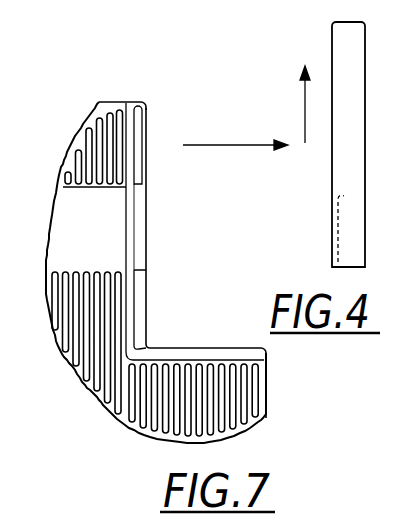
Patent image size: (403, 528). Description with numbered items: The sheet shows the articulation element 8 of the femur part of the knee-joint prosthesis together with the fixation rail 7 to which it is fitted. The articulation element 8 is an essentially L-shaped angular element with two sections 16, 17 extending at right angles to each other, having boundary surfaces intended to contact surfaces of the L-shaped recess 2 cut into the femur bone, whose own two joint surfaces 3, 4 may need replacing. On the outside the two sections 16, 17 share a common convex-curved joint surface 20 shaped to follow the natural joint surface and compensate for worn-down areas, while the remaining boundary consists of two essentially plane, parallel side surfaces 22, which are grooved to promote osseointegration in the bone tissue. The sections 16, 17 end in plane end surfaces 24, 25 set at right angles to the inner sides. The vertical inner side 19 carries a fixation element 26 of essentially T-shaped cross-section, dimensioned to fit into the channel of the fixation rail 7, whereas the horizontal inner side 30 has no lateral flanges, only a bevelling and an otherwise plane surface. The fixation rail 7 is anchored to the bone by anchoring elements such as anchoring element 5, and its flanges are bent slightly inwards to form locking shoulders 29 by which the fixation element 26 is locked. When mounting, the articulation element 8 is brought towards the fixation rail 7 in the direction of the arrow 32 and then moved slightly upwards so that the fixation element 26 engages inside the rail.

In FIG. 4, the fixation rail 7 is at (364, 235).
In FIG. 4, the locking shoulders 29 is at (330, 205).
In FIG. 7, the arrow 32 is at (235, 145).
In FIG. 7, the end surface 24 is at (113, 102).
In FIG. 7, the fixation element 26 is at (147, 138).
In FIG. 7, the inner side 19 is at (128, 298).
In FIG. 7, the horizontal inner side 30 is at (183, 348).
In FIG. 7, the end surface 25 is at (266, 368).
In FIG. 7, the section 17 is at (261, 402).
In FIG. 7, the section 16 is at (63, 208).
In FIG. 7, the convex-curved joint surface 20 is at (53, 320).
In FIG. 7, the articulation element 8 is at (75, 380).
In FIG. 7, the side surfaces 22 is at (112, 405).
In FIG. 7, the anchoring element 5 is at (4, 106).
In FIG. 7, the recess 2 is at (2, 141).
In FIG. 7, the joint surface 4 is at (3, 251).
In FIG. 7, the joint surface 3 is at (2, 313).